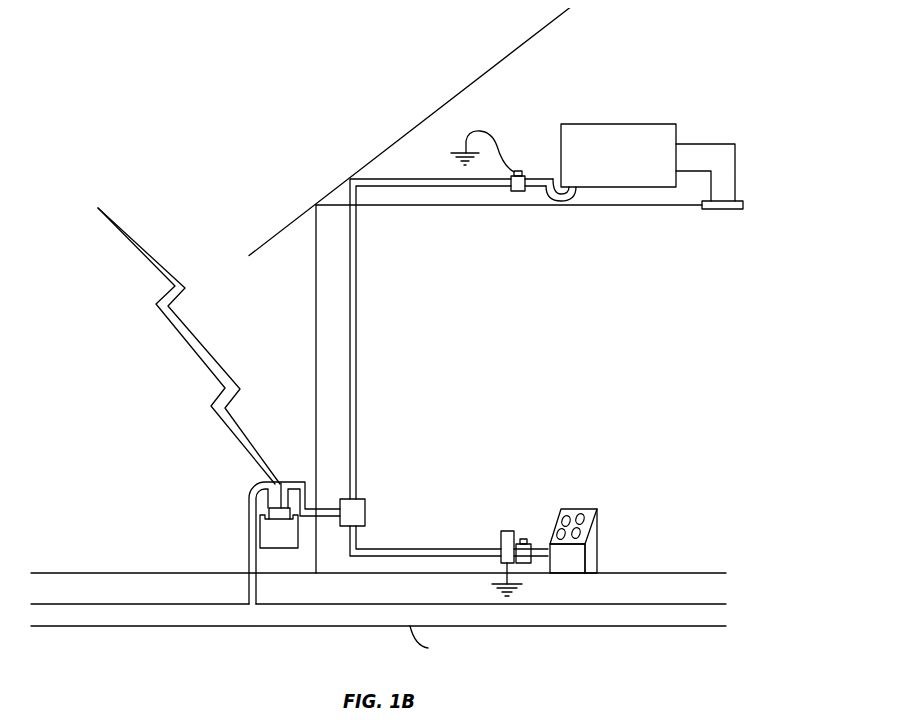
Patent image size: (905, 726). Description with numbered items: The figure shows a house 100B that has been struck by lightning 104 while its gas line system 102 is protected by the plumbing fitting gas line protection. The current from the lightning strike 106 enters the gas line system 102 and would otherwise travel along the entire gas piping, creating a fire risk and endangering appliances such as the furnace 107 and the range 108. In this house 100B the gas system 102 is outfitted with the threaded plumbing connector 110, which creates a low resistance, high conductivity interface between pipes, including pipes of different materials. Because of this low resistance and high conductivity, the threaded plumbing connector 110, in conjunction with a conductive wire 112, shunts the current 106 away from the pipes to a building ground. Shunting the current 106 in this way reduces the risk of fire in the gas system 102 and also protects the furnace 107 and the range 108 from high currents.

The house 100B is at (220, 153).
The gas line system 102 is at (377, 504).
The lightning 104 is at (142, 250).
The current from the lightning strike 106 is at (426, 166).
The furnace 107 is at (615, 122).
The range 108 is at (598, 532).
The threaded plumbing connector 110 is at (517, 190).
The conductive wire 112 is at (492, 160).